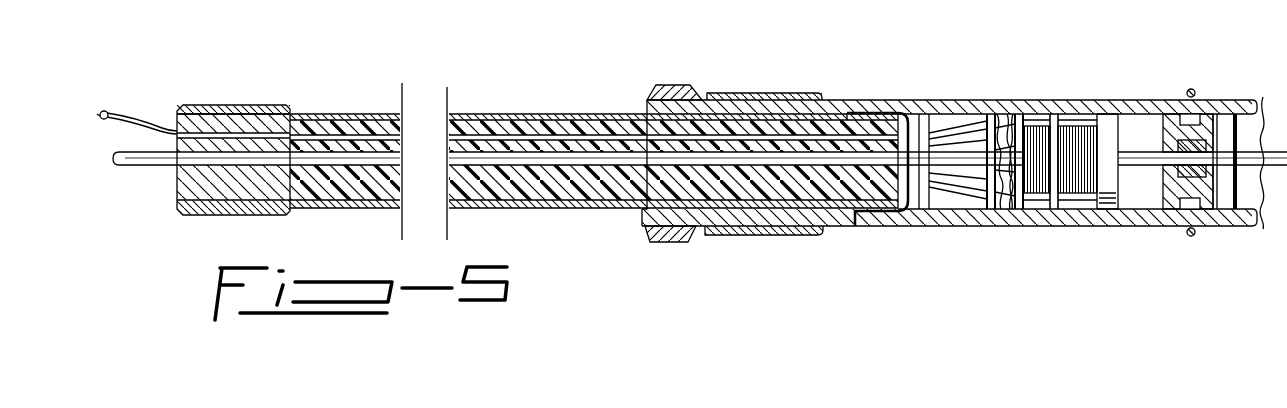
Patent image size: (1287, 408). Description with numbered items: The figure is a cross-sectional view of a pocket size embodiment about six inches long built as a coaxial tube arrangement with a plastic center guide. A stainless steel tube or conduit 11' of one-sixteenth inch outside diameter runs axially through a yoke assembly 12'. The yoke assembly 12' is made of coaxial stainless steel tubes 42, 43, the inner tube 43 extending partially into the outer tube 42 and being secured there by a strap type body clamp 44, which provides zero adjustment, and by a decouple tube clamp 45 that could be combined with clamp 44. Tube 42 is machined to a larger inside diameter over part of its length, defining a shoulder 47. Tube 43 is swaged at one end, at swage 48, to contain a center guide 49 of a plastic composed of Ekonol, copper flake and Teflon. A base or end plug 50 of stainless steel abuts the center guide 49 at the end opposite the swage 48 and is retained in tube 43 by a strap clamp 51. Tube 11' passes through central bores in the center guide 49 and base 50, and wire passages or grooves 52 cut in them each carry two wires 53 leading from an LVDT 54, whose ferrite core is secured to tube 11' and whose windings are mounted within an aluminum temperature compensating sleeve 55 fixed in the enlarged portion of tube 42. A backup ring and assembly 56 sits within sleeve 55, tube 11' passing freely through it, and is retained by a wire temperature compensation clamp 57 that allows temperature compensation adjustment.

The tube or conduit 11' is at (700, 114).
The yoke assembly 12' is at (594, 128).
The tube 42 is at (780, 228).
The tube 43 is at (348, 207).
The strap type body clamp 44 is at (785, 76).
The decouple tube clamp 45 is at (692, 77).
The shoulder 47 is at (855, 228).
The swage 48 is at (918, 130).
The center guide 49 is at (556, 196).
The base or end plug 50 is at (247, 190).
The strap clamp 51 is at (245, 110).
The wire passages or grooves 52 is at (350, 118).
The wires 53 is at (110, 113).
The LVDT 54 is at (1034, 152).
The temperature compensating sleeve 55 is at (1132, 112).
The backup ring and assembly 56 is at (1190, 127).
The wire temperature compensation clamp 57 is at (1191, 240).